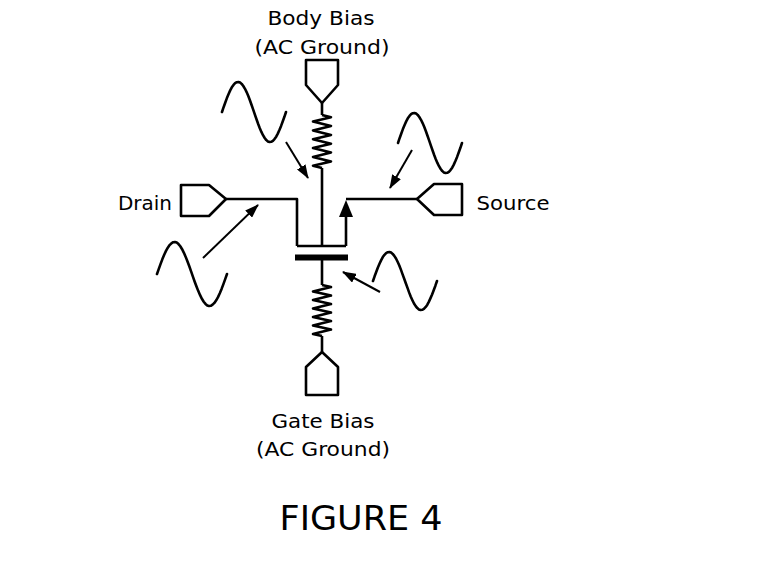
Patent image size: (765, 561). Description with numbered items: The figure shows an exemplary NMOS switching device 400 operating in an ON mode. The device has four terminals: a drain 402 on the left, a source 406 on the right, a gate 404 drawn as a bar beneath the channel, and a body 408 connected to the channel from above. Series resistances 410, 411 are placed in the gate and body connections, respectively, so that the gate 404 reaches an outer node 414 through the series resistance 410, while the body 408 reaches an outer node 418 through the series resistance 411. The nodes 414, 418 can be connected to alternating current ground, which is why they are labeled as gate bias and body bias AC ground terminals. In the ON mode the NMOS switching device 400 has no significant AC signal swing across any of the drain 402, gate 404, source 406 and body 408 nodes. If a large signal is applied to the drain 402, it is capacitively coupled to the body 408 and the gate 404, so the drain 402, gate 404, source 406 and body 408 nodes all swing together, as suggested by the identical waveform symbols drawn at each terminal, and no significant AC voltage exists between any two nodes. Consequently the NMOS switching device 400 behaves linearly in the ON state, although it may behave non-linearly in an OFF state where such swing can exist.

The NMOS switching device 400 is at (472, 66).
The drain 402 is at (193, 184).
The gate 404 is at (301, 262).
The source 406 is at (462, 184).
The body 408 is at (324, 246).
The series resistance 410 is at (345, 322).
The series resistance 411 is at (340, 133).
The node 414 is at (338, 377).
The node 418 is at (338, 77).